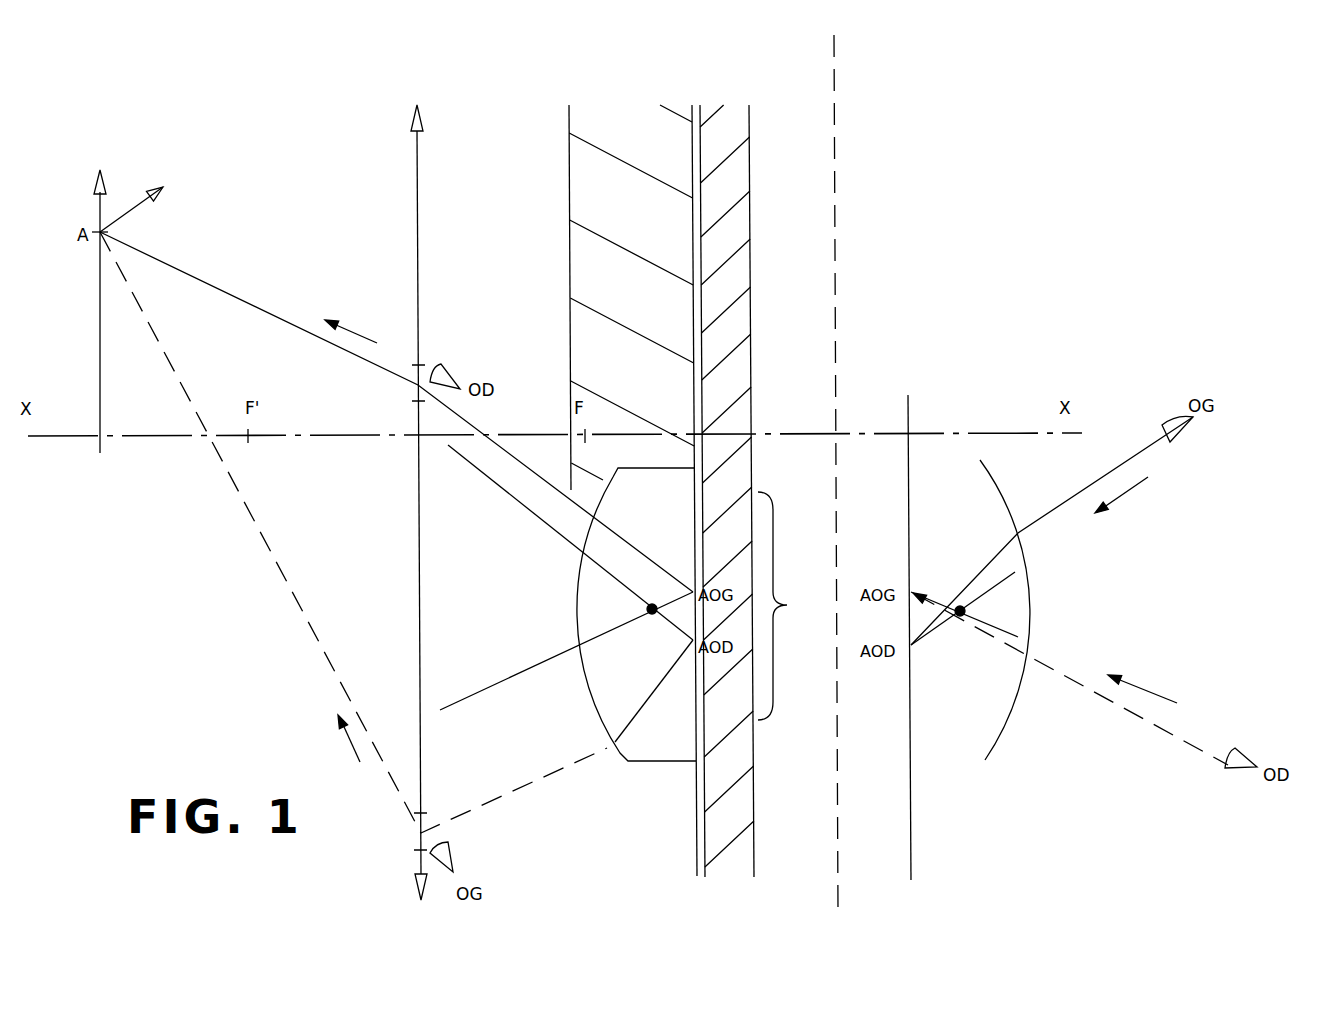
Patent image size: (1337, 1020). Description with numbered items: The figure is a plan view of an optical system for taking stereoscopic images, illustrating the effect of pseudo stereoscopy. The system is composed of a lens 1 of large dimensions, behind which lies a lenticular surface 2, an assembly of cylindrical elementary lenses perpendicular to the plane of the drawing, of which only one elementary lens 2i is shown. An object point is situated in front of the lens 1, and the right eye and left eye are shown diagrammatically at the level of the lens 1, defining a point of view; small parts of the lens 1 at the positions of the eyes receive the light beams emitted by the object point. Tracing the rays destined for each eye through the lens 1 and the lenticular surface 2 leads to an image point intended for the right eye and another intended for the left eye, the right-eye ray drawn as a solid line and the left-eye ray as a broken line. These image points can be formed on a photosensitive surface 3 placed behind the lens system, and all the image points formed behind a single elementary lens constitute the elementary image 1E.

The lens 1 is at (417, 204).
The lenticular surface 2 is at (620, 477).
The elementary lens 2i is at (600, 735).
The photosensitive surface 3 is at (727, 477).
The elementary image 1E is at (785, 606).